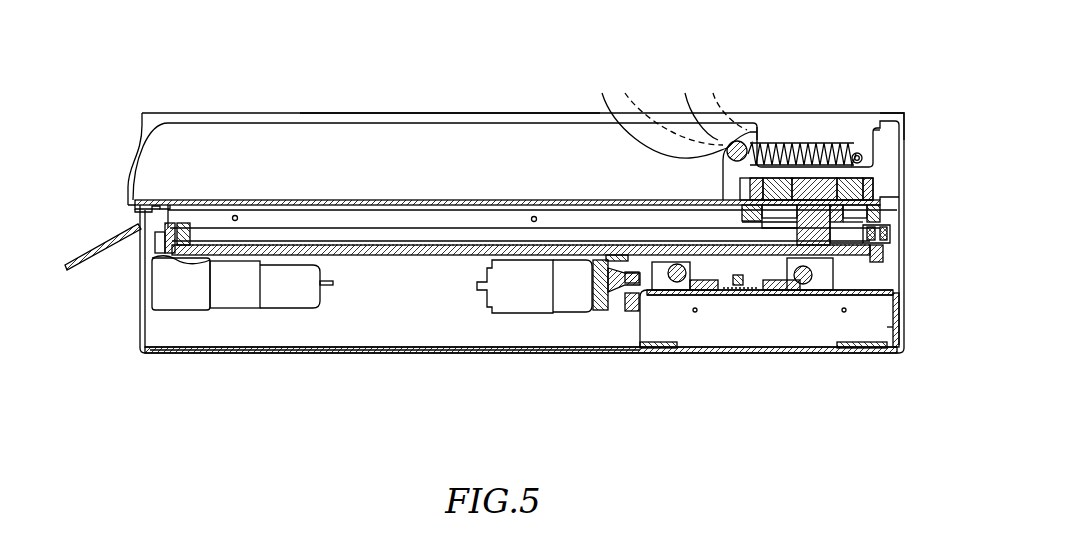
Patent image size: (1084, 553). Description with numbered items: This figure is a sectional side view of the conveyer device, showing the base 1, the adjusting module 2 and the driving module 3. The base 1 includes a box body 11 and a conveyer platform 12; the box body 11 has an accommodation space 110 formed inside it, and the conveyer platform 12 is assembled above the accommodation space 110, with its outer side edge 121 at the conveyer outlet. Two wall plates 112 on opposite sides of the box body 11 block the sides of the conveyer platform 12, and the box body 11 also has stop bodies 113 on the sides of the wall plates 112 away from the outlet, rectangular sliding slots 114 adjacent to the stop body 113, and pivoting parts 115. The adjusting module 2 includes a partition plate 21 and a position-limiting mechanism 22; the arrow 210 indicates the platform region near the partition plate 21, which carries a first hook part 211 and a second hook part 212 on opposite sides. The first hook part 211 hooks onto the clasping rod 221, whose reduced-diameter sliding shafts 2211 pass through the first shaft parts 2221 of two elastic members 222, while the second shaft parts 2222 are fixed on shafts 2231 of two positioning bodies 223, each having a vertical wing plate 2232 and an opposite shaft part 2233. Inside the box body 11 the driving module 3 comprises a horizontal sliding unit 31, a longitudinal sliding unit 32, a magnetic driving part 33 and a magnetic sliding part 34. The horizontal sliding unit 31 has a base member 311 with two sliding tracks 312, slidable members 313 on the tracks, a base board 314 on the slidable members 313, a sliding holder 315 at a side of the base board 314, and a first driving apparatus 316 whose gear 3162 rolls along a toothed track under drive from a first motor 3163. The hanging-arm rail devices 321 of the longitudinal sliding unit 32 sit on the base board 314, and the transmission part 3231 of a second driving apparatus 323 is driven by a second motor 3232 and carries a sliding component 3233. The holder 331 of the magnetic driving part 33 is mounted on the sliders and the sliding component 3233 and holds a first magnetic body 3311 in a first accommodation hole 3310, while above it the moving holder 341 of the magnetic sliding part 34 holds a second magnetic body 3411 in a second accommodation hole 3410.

The base 1 is at (473, 358).
The adjusting module 2 is at (175, 72).
The driving module 3 is at (699, 477).
The box body 11 is at (428, 350).
The conveyer platform 12 is at (182, 200).
The partition plate 21 is at (187, 130).
The position-limiting mechanism 22 is at (763, 73).
The horizontal sliding unit 31 is at (643, 430).
The longitudinal sliding unit 32 is at (115, 304).
The magnetic driving part 33 is at (798, 403).
The magnetic sliding part 34 is at (855, 403).
The accommodation space 110 is at (381, 324).
The wall plate 112 is at (450, 118).
The stop body 113 is at (903, 116).
The sliding slot 114 is at (720, 101).
The pivoting part 115 is at (760, 125).
The outer side edge 121 is at (135, 203).
The rotation direction 210 is at (165, 160).
The first hook part 211 is at (692, 96).
The second hook part 212 is at (140, 202).
The clasping rod 221 is at (656, 115).
The elastic member 222 is at (823, 176).
The positioning body 223 is at (785, 135).
The base member 311 is at (710, 322).
The sliding track 312 is at (677, 283).
The slidable member 313 is at (628, 292).
The base board 314 is at (690, 284).
The sliding holder 315 is at (607, 311).
The first driving apparatus 316 is at (503, 406).
The hanging-arm rail device 321 is at (157, 239).
The second driving apparatus 323 is at (297, 406).
The holder 331 is at (807, 222).
The moving holder 341 is at (867, 222).
The sliding shaft 2211 is at (660, 99).
The first shaft part 2221 is at (737, 141).
The second shaft part 2222 is at (867, 176).
The shaft 2231 is at (857, 152).
The wing plate 2232 is at (885, 176).
The shaft part 2233 is at (800, 176).
The gear 3162 is at (627, 294).
The first motor 3163 is at (522, 296).
The transmission part 3231 is at (307, 232).
The second motor 3232 is at (248, 292).
The sliding component 3233 is at (810, 283).
The first accommodation hole 3310 is at (783, 228).
The first magnetic body 3311 is at (750, 216).
The second accommodation hole 3410 is at (890, 328).
The second magnetic body 3411 is at (882, 262).